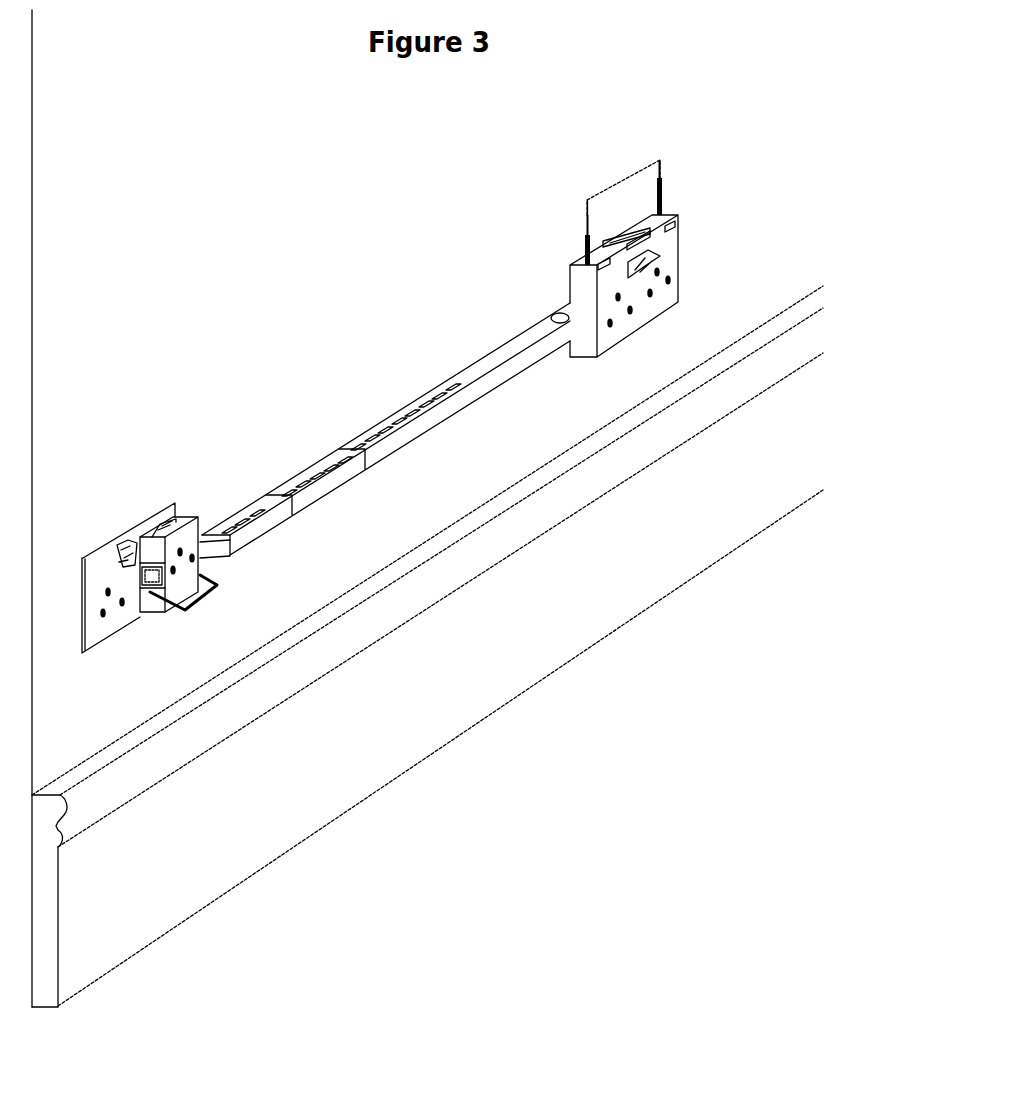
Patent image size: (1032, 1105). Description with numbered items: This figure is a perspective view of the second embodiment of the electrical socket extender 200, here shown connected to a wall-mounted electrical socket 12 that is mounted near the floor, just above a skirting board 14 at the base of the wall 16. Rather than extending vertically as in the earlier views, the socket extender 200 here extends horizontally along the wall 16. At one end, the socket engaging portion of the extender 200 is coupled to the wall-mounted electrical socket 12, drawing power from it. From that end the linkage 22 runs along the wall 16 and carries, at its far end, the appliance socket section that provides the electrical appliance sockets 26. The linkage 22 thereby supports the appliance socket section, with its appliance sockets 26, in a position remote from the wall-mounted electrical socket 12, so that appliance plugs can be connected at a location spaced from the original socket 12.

The wall-mounted electrical socket 12 is at (113, 612).
The skirting board 14 is at (250, 775).
The wall 16 is at (80, 238).
The linkage 22 is at (365, 380).
The electrical appliance socket 26 is at (667, 262).
The electrical socket extender 200 is at (496, 594).